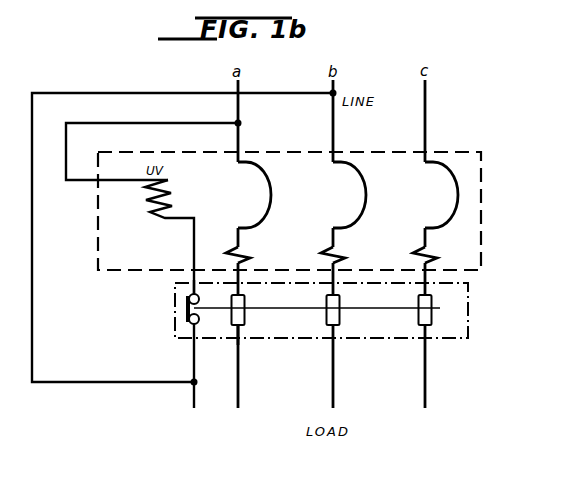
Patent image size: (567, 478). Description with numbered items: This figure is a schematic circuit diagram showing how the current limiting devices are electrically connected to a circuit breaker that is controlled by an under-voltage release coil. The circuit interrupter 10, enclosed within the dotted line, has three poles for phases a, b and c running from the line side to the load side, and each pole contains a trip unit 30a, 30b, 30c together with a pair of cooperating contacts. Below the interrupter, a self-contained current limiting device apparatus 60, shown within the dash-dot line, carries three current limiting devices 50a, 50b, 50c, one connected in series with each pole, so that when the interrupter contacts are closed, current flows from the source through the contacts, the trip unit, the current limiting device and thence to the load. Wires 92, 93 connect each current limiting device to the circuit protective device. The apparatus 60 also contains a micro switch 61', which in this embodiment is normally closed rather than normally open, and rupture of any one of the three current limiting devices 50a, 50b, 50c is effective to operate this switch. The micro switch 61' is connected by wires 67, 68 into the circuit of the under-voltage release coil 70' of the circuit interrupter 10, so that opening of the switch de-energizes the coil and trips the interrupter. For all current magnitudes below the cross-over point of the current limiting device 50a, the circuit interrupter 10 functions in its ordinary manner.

The circuit interrupter 10 is at (483, 221).
The trip unit 30a is at (243, 248).
The trip unit 30b is at (337, 250).
The trip unit 30c is at (427, 253).
The current limiting device 50a is at (246, 320).
The current limiting device 50b is at (341, 319).
The current limiting device 50c is at (433, 320).
The current limiting device apparatus 60 is at (470, 313).
The micro switch 61' is at (164, 309).
The wire 67 is at (193, 281).
The wire 68 is at (198, 328).
The under-voltage release coil 70' is at (124, 237).
The wire 92 is at (243, 332).
The wire 93 is at (244, 273).